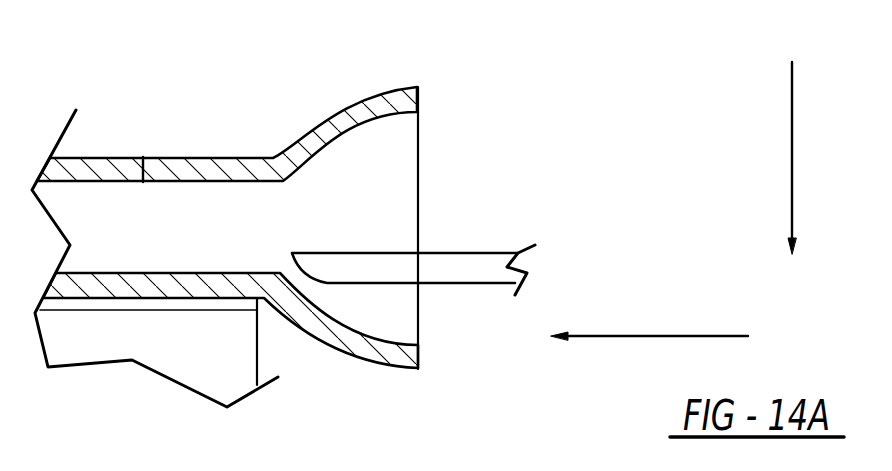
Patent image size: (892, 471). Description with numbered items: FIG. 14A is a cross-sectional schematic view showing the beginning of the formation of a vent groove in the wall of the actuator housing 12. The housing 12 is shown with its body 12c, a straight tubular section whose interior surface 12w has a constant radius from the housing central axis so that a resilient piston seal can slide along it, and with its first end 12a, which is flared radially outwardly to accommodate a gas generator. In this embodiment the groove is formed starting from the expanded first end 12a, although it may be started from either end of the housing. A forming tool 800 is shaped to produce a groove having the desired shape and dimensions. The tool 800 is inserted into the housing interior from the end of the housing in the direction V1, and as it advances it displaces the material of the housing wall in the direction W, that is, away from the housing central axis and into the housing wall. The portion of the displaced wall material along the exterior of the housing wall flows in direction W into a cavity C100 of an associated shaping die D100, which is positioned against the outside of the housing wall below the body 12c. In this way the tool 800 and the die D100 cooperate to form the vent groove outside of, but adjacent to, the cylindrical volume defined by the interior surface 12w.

The housing 12 is at (403, 139).
The first end 12a is at (318, 317).
The body 12c is at (220, 163).
The interior surface 12w is at (143, 160).
The forming tool 800 is at (443, 272).
The cavity C100 is at (100, 302).
The shaping die D100 is at (202, 345).
The direction of wall material displacement W is at (805, 158).
The direction of tool insertion V1 is at (649, 353).